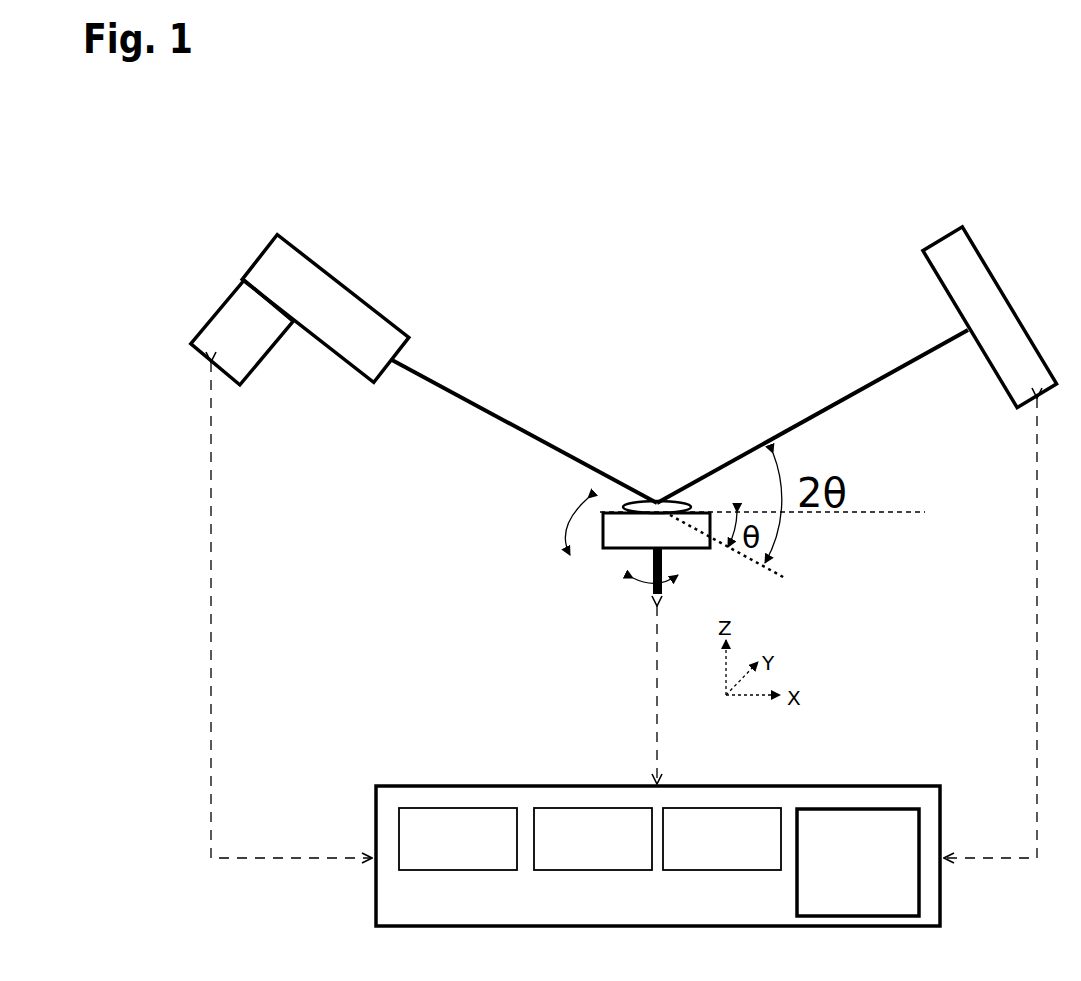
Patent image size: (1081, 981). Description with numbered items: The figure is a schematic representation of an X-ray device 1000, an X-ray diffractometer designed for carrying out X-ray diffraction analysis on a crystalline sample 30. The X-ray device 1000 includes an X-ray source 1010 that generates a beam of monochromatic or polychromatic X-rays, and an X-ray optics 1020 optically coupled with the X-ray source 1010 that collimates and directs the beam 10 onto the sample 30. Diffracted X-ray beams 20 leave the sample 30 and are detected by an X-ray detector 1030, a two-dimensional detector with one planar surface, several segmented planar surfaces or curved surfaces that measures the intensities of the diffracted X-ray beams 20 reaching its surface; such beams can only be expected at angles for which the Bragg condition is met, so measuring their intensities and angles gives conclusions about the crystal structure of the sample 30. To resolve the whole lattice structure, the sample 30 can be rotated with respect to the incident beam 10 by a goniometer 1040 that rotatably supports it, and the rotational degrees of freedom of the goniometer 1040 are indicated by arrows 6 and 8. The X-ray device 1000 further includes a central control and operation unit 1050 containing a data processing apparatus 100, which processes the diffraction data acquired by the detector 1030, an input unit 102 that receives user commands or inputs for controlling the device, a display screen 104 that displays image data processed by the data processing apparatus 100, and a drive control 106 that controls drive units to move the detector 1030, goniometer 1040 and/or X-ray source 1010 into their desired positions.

The X-ray device 1000 is at (663, 127).
The X-ray source 1010 is at (242, 332).
The X-ray optics 1020 is at (325, 309).
The X-ray detector 1030 is at (990, 317).
The goniometer 1040 is at (635, 528).
The control and operation unit 1050 is at (658, 856).
The beam 10 is at (517, 428).
The diffracted X-ray beams 20 is at (798, 424).
The sample 30 is at (657, 503).
The arrow 6 is at (567, 517).
The arrow 8 is at (640, 578).
The drive control 106 is at (458, 839).
The display screen 104 is at (593, 839).
The input unit 102 is at (722, 839).
The data processing apparatus 100 is at (858, 862).